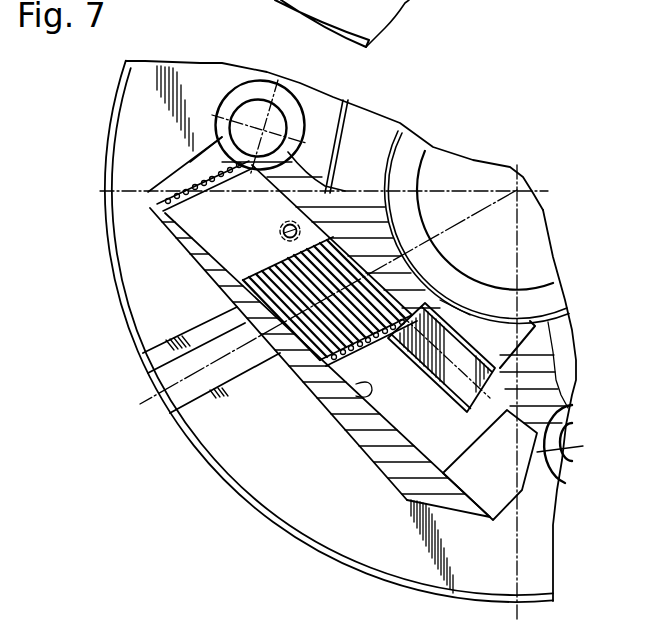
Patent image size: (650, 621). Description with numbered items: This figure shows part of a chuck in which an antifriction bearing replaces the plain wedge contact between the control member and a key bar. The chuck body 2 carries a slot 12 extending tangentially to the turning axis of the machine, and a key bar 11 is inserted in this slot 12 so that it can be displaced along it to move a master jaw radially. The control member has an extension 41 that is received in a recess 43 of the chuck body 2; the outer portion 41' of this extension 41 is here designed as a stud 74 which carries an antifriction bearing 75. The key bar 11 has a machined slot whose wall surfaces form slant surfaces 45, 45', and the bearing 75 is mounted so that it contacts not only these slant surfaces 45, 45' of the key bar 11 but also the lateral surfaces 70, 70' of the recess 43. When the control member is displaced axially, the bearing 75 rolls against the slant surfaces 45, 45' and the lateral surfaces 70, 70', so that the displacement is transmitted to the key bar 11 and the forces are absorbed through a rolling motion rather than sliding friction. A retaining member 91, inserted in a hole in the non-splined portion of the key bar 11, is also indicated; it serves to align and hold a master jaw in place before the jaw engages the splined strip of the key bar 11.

The chuck body 2 is at (542, 365).
The key bar 11 is at (312, 395).
The slot 12 is at (350, 398).
The extension 41 is at (583, 405).
The outer portion of extension 41' is at (381, 23).
The recess 43 is at (440, 300).
The slant surface 45 is at (458, 357).
The slant surface 45' is at (589, 443).
The lateral surface of recess 70 is at (474, 212).
The lateral surface of recess 70' is at (312, 226).
The stud 74 is at (428, 366).
The antifriction bearing 75 is at (468, 405).
The retaining member 91 is at (258, 243).